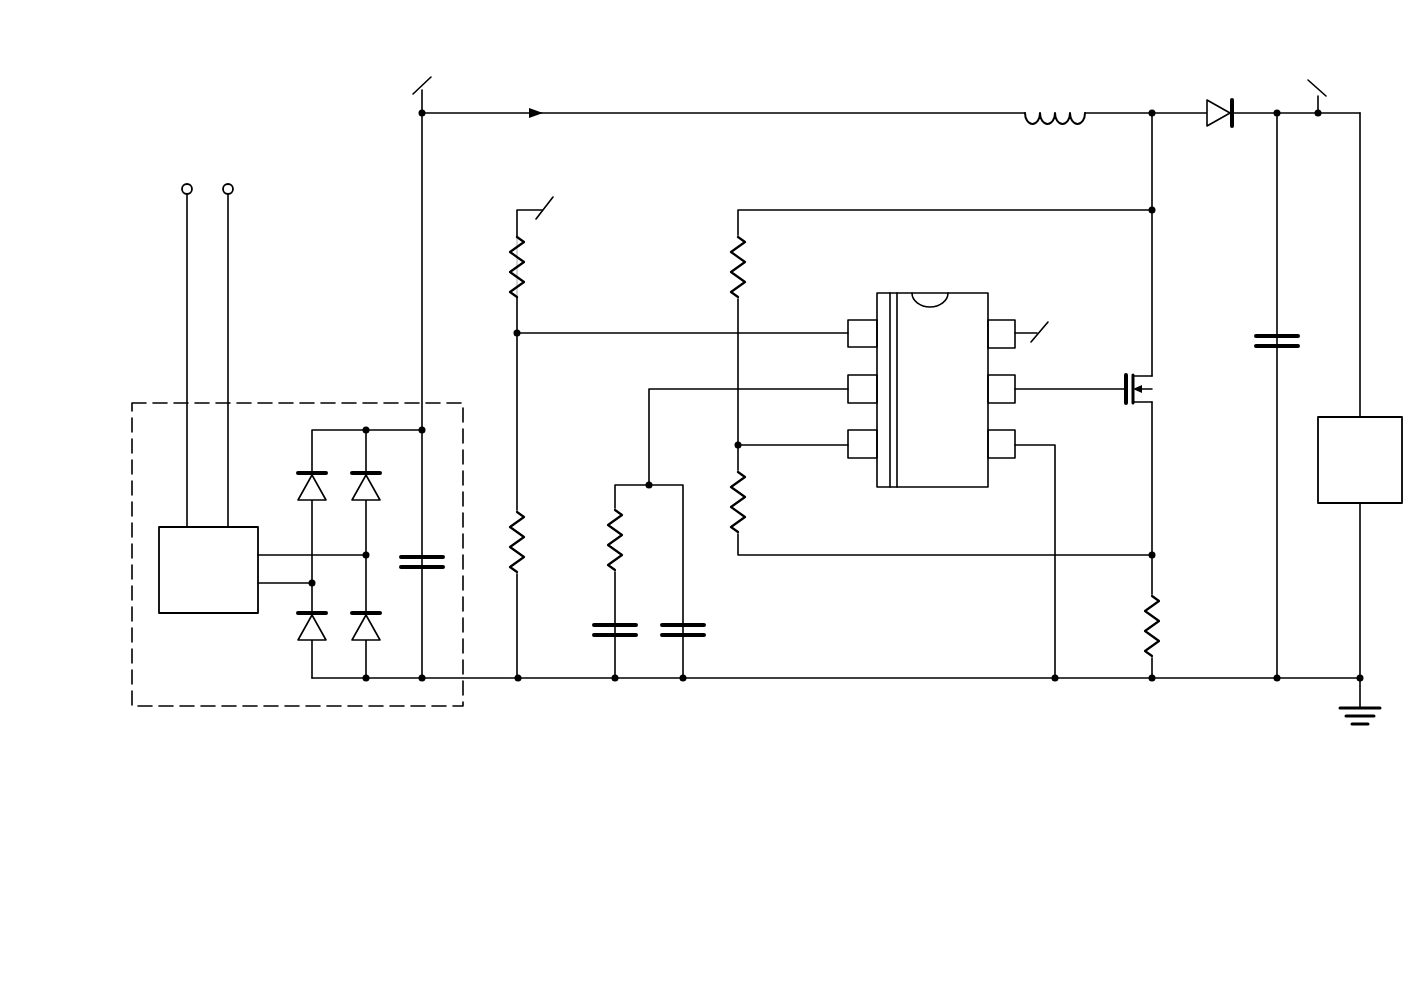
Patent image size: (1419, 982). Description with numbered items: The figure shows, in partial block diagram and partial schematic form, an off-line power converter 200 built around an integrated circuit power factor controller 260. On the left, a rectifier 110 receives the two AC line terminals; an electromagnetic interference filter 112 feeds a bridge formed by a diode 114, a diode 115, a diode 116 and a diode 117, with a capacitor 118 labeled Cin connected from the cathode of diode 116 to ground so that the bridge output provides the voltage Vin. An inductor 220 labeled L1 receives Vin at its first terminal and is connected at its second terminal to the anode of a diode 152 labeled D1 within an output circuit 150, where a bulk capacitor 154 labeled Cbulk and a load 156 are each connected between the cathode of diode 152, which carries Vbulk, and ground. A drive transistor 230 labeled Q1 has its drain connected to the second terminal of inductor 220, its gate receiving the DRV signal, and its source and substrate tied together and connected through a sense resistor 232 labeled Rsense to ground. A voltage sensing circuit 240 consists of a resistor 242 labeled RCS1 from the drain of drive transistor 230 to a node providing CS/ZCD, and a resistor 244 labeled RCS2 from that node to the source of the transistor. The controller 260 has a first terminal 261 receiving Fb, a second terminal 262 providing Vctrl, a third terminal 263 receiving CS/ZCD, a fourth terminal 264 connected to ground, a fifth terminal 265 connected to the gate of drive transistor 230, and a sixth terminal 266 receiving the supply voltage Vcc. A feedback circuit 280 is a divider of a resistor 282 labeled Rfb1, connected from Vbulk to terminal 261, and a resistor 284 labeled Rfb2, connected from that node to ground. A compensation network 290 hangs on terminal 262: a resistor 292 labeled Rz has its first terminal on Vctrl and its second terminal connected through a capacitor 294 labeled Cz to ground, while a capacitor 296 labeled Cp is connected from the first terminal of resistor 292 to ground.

The rectifier 110 is at (276, 403).
The electromagnetic interference filter 112 is at (194, 613).
The diode 114 is at (300, 488).
The diode 115 is at (300, 629).
The diode 116 is at (375, 488).
The diode 117 is at (375, 629).
The capacitor 118 is at (437, 551).
The output circuit 150 is at (1277, 709).
The diode 152 is at (1234, 100).
The bulk capacitor 154 is at (1273, 328).
The load 156 is at (1385, 417).
The off-line power converter 200 is at (701, 790).
The inductor 220 is at (1026, 116).
The drive transistor 230 is at (1129, 406).
The sense resistor 232 is at (1154, 620).
The voltage sensing circuit 240 is at (742, 184).
The resistor 242 is at (729, 267).
The resistor 244 is at (728, 470).
The integrated circuit power factor controller 260 is at (962, 445).
The first terminal 261 is at (862, 318).
The second terminal 262 is at (848, 399).
The third terminal 263 is at (862, 460).
The fourth terminal 264 is at (1006, 460).
The fifth terminal 265 is at (1015, 398).
The sixth terminal 266 is at (1008, 318).
The feedback circuit 280 is at (530, 708).
The resistor 282 is at (507, 267).
The resistor 284 is at (514, 513).
The compensation network 290 is at (642, 708).
The resistor 292 is at (606, 540).
The capacitor 294 is at (632, 620).
The capacitor 296 is at (700, 620).